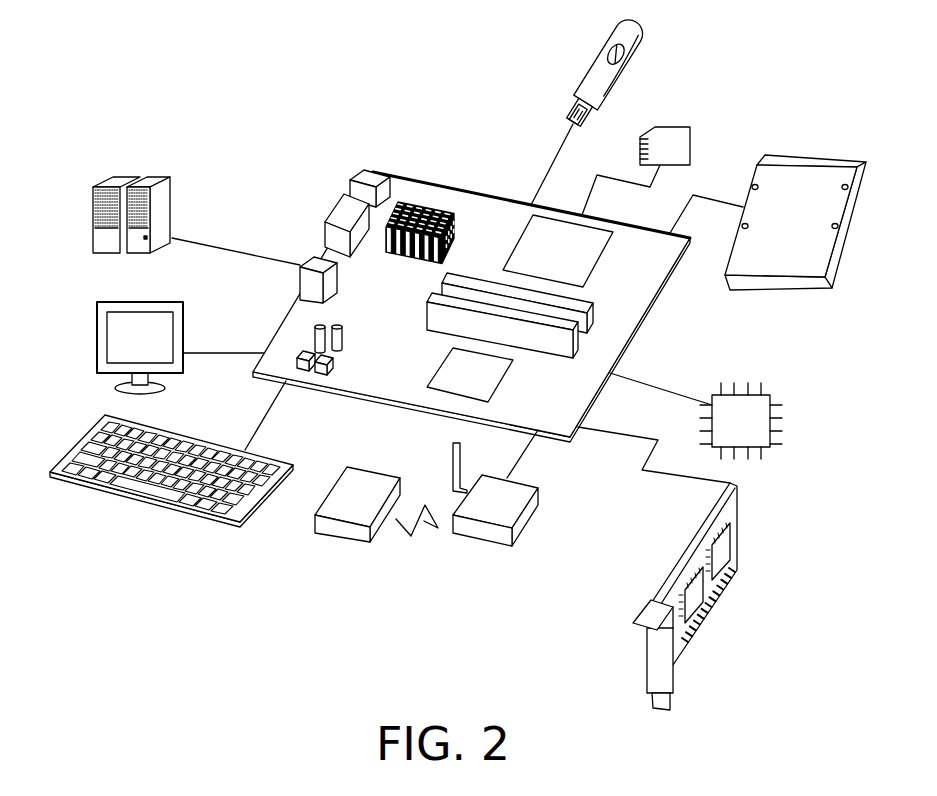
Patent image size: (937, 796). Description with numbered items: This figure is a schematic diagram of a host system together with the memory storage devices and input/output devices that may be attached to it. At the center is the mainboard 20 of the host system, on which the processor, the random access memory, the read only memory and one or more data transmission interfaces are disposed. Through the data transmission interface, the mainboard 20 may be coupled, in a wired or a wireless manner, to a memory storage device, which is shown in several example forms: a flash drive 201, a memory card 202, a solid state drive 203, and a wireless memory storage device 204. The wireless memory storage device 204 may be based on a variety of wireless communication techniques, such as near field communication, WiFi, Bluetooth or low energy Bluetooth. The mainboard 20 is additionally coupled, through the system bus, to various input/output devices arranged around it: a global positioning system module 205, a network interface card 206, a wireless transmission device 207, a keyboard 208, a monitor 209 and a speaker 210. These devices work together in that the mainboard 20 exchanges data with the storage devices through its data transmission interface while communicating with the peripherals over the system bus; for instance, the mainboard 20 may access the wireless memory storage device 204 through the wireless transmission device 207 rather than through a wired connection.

The mainboard 20 is at (473, 210).
The flash drive 201 is at (594, 62).
The memory card 202 is at (690, 134).
The solid state drive 203 is at (812, 153).
The wireless memory storage device 204 is at (332, 482).
The global positioning system module 205 is at (770, 420).
The network interface card 206 is at (737, 540).
The wireless transmission device 207 is at (533, 527).
The keyboard 208 is at (175, 508).
The monitor 209 is at (97, 356).
The speaker 210 is at (93, 240).